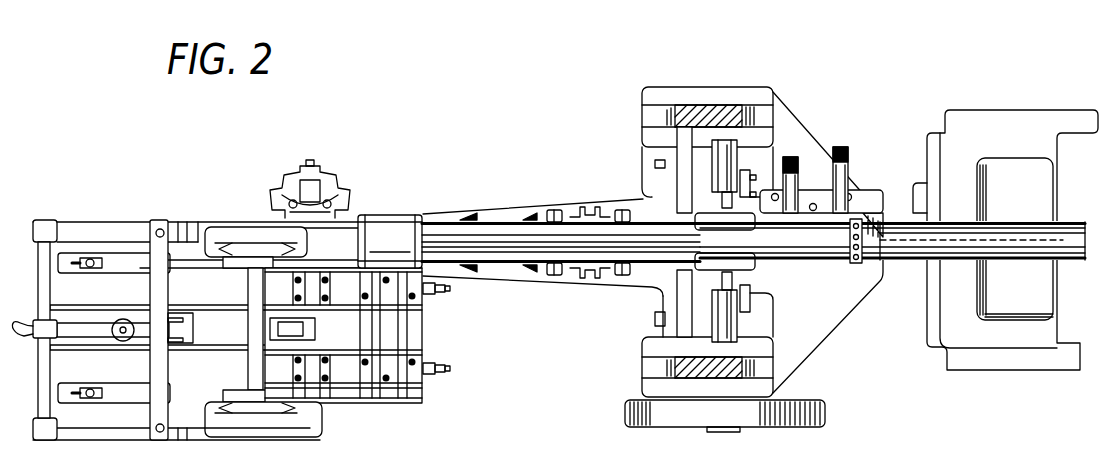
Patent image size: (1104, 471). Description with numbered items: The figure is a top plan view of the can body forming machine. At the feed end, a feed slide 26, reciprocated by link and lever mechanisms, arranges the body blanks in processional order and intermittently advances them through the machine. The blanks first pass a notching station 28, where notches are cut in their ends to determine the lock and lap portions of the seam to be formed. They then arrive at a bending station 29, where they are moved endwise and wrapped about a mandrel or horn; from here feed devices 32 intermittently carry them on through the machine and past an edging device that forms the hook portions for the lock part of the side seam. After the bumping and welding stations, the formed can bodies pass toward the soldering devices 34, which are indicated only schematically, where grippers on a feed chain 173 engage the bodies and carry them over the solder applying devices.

The feed slide 26 is at (862, 215).
The notching station 28 is at (293, 417).
The bending station 29 is at (397, 225).
The feed devices 32 is at (347, 265).
The soldering devices 34 is at (998, 333).
The feed chain 173 is at (963, 243).